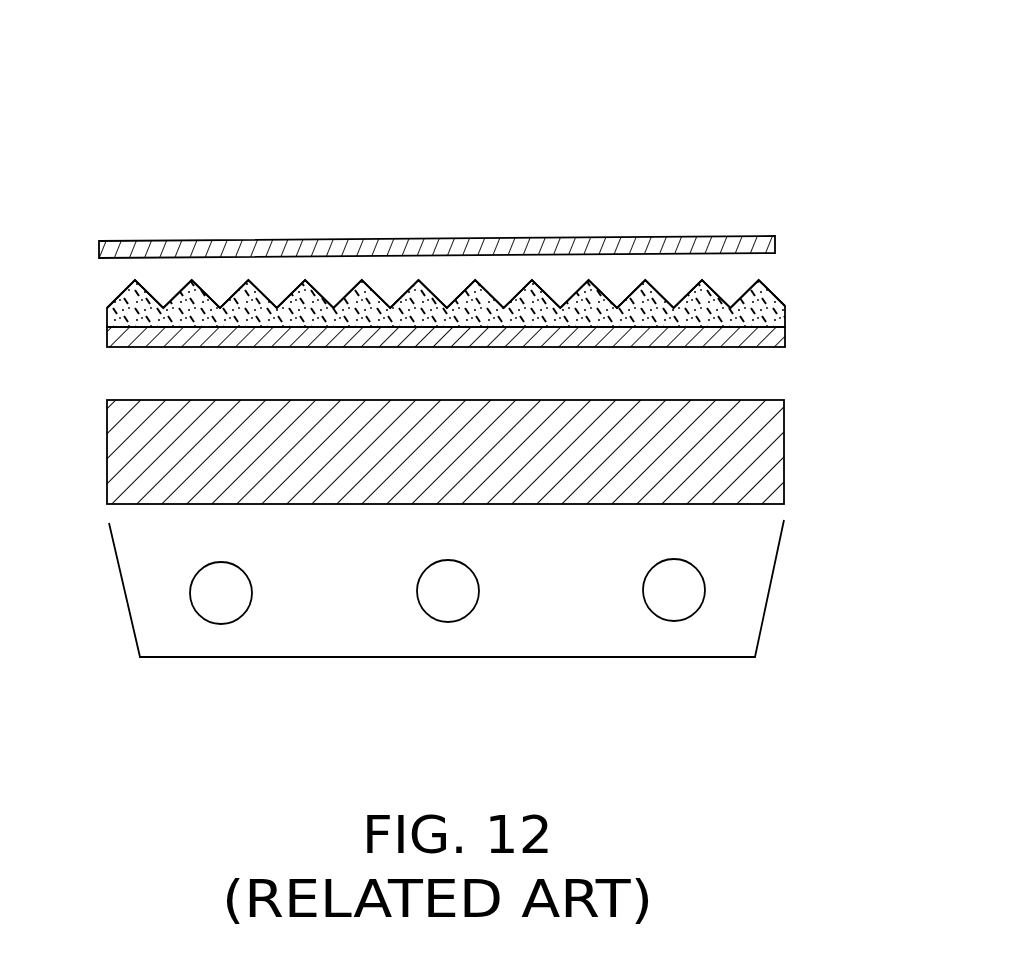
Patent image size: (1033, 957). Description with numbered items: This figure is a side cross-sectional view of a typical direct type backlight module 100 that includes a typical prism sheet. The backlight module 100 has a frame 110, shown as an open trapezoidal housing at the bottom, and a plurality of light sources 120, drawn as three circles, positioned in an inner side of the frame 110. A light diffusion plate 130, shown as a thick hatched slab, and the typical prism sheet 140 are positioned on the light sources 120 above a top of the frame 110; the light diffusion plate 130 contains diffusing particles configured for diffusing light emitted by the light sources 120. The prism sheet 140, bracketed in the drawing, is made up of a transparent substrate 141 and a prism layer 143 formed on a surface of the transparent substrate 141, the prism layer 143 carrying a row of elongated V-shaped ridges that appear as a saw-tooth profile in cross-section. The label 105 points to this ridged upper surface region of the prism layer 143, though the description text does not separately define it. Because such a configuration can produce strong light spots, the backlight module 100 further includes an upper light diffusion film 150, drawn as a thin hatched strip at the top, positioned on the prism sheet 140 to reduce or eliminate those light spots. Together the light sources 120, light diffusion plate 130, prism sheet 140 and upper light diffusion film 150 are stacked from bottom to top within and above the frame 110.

The direct type backlight module 100 is at (367, 89).
The prism microstructures 105 is at (132, 292).
The frame 110 is at (768, 600).
The light sources 120 is at (682, 582).
The light diffusion plate 130 is at (785, 448).
The typical prism sheet 140 is at (873, 283).
The transparent substrate 141 is at (772, 340).
The prism layer 143 is at (759, 318).
The upper light diffusion film 150 is at (776, 237).